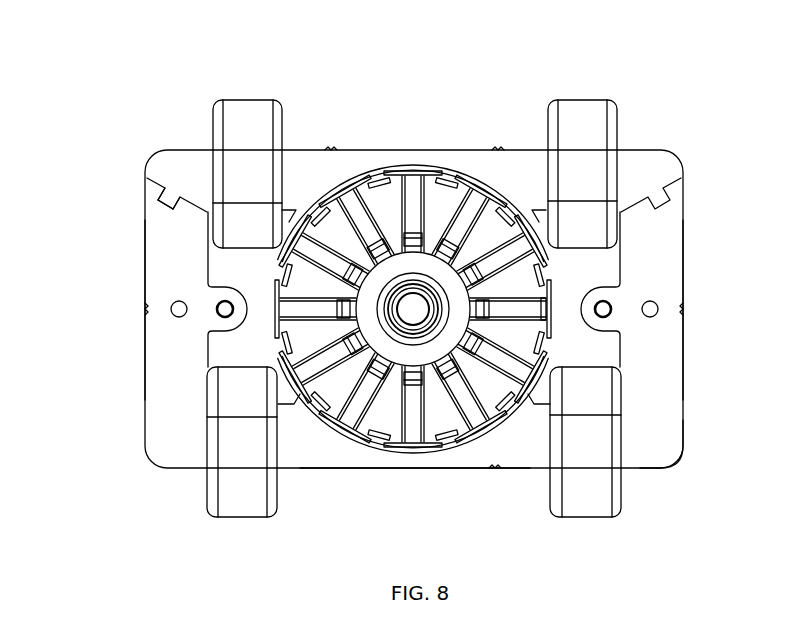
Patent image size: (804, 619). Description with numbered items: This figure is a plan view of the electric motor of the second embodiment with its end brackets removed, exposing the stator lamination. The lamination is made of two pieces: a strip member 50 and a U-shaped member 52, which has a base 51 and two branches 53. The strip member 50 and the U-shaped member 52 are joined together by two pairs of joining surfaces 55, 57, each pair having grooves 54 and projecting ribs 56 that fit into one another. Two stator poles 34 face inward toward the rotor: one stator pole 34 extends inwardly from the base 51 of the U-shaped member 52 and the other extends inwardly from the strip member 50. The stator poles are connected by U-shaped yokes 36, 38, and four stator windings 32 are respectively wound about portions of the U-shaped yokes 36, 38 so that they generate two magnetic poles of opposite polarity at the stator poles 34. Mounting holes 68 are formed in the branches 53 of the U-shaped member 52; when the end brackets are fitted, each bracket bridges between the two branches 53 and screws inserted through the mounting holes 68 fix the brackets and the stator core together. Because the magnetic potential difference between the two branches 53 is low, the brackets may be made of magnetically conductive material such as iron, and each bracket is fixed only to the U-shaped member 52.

The stator windings 32 is at (247, 118).
The stator poles 34 is at (404, 160).
The U-shaped yoke 36 is at (658, 228).
The U-shaped yoke 38 is at (168, 265).
The strip member 50 is at (660, 145).
The base 51 is at (507, 443).
The U-shaped member 52 is at (676, 476).
The branches 53 is at (165, 380).
The grooves 54 is at (157, 210).
The joining surface 55 is at (158, 177).
The projecting ribs 56 is at (173, 200).
The joining surface 57 is at (180, 215).
The mounting holes 68 is at (657, 306).